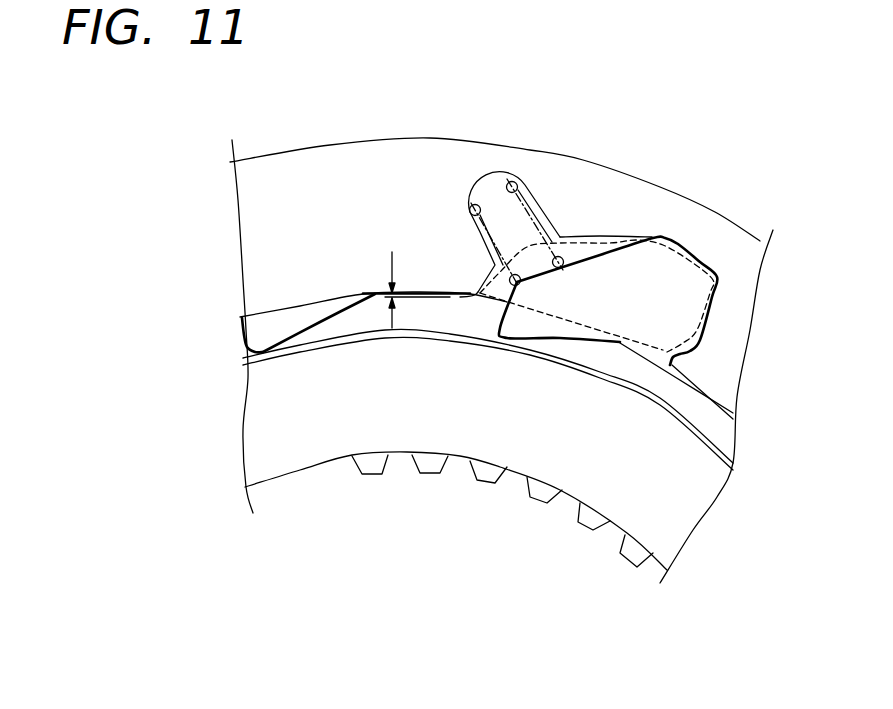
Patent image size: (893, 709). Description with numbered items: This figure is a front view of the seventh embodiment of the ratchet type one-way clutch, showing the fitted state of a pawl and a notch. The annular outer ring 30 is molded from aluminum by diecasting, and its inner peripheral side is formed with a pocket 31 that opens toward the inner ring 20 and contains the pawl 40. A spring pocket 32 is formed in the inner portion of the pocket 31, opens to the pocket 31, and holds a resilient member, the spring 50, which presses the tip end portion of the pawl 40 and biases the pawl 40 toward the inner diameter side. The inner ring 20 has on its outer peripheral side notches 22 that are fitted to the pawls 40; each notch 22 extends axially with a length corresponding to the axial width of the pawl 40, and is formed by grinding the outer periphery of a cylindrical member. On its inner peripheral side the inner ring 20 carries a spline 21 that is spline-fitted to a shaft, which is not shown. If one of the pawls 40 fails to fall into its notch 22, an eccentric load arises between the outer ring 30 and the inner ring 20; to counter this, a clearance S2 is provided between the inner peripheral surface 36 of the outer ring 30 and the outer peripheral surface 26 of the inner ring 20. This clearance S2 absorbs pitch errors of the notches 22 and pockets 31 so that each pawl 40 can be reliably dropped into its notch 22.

The inner ring 20 is at (315, 450).
The spline 21 is at (431, 465).
The notch 22 is at (262, 339).
The outer peripheral surface 26 is at (423, 293).
The outer ring 30 is at (710, 227).
The pocket 31 is at (578, 243).
The spring pocket 32 is at (482, 192).
The inner peripheral surface 36 is at (308, 303).
The pawl 40 is at (635, 260).
The spring 50 is at (528, 185).
The clearance S2 is at (392, 252).